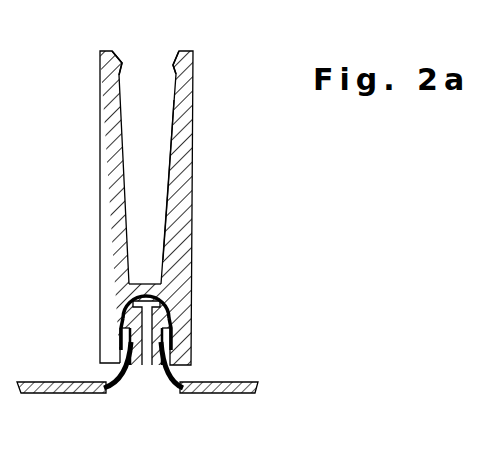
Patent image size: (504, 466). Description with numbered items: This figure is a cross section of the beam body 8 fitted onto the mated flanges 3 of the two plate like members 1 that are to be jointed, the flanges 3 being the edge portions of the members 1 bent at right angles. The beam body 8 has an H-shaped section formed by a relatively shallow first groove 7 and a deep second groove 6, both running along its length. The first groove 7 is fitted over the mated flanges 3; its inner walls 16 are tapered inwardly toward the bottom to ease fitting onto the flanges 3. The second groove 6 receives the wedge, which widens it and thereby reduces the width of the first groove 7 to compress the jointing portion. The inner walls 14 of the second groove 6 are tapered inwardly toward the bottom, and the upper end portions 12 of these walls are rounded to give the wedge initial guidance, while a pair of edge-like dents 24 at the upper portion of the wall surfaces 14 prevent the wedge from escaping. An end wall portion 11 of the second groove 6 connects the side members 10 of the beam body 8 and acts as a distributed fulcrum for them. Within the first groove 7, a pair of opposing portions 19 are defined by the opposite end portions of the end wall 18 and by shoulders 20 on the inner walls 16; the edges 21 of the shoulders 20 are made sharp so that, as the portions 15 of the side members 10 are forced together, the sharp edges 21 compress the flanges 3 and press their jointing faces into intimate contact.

The plate like member 1 is at (218, 394).
The flange 3 is at (162, 340).
The second groove 6 is at (146, 108).
The first groove 7 is at (150, 298).
The beam body 8 is at (177, 175).
The side member 10 is at (176, 215).
The end wall portion 11 is at (136, 283).
The upper end portion 12 is at (170, 57).
The inner wall 14 is at (163, 152).
The portion of side member 15 is at (110, 355).
The inner wall of first groove 16 is at (155, 378).
The end wall 18 is at (124, 296).
The opposing portion 19 is at (165, 312).
The shoulder 20 is at (121, 318).
The sharp edge 21 is at (112, 338).
The edge-like dent 24 is at (131, 66).